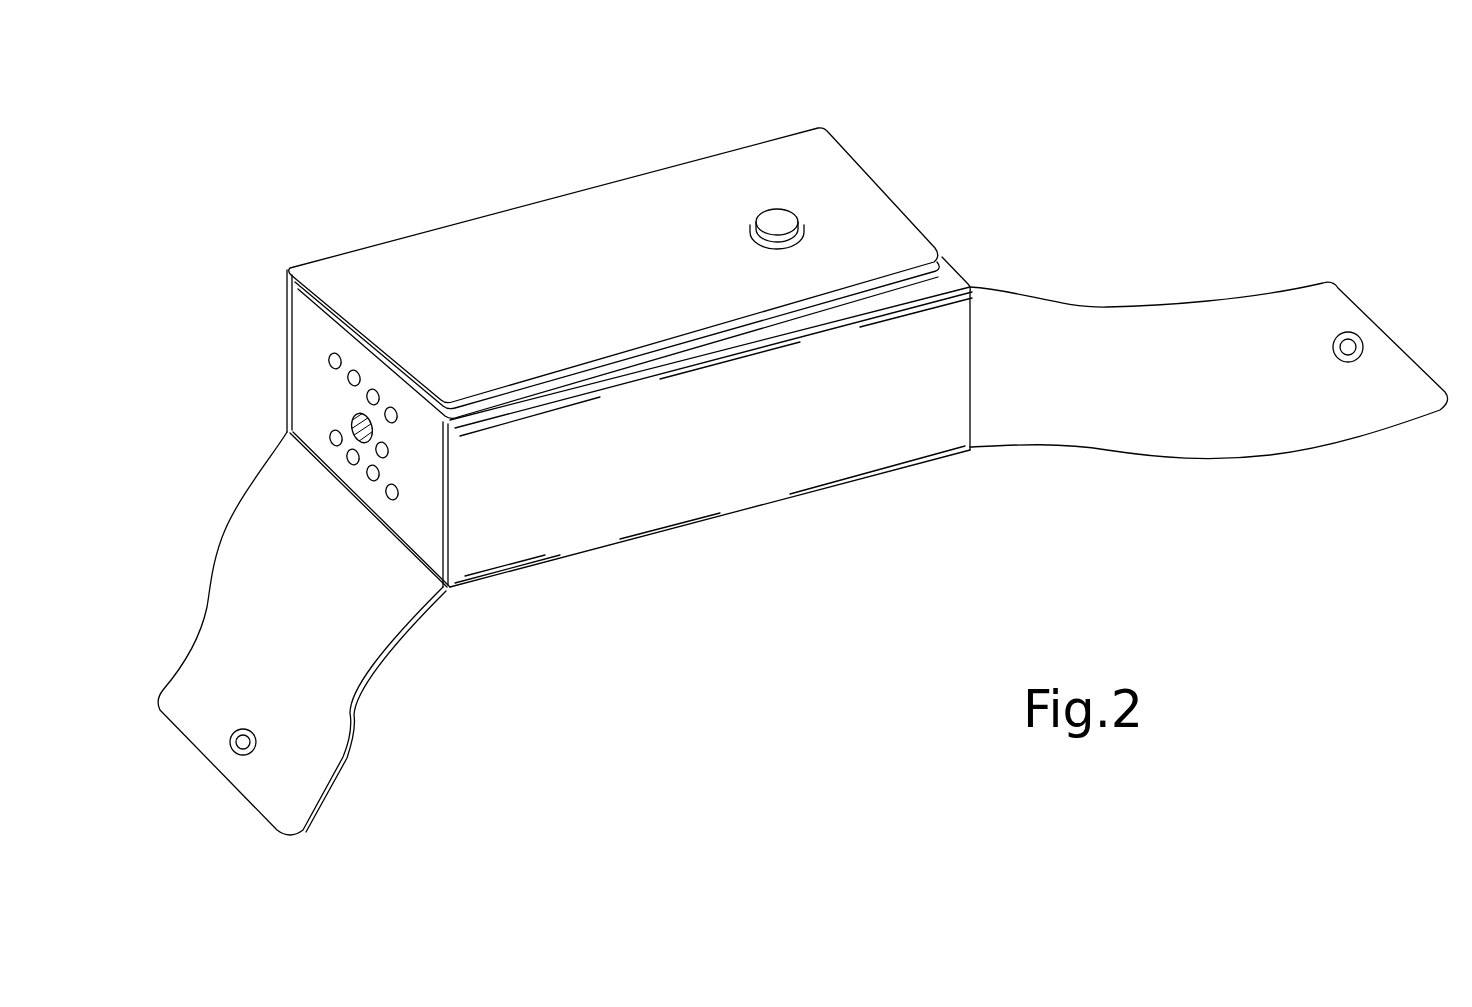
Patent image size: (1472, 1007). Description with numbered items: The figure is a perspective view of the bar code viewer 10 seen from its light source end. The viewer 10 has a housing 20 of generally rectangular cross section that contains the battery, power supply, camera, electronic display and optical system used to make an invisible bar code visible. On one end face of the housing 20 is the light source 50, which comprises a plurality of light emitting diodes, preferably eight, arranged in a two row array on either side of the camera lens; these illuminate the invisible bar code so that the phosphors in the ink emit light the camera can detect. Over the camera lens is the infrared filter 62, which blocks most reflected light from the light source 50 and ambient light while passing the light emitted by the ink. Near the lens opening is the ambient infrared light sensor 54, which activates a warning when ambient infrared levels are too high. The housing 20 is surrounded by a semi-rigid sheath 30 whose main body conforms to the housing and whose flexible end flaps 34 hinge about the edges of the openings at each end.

The bar code viewer 10 is at (358, 193).
The housing 20 is at (412, 542).
The sheath 30 is at (523, 238).
The end flap 34 is at (223, 613).
The light source 50 is at (331, 355).
The ambient infrared light sensor 54 is at (388, 453).
The infrared filter 62 is at (352, 418).